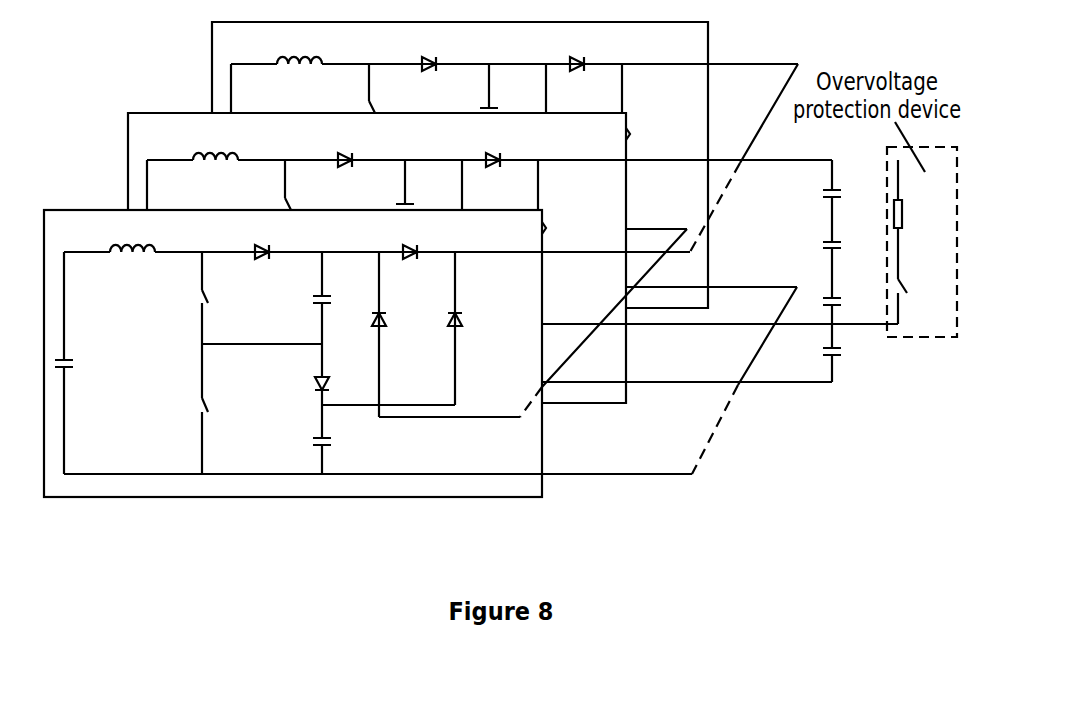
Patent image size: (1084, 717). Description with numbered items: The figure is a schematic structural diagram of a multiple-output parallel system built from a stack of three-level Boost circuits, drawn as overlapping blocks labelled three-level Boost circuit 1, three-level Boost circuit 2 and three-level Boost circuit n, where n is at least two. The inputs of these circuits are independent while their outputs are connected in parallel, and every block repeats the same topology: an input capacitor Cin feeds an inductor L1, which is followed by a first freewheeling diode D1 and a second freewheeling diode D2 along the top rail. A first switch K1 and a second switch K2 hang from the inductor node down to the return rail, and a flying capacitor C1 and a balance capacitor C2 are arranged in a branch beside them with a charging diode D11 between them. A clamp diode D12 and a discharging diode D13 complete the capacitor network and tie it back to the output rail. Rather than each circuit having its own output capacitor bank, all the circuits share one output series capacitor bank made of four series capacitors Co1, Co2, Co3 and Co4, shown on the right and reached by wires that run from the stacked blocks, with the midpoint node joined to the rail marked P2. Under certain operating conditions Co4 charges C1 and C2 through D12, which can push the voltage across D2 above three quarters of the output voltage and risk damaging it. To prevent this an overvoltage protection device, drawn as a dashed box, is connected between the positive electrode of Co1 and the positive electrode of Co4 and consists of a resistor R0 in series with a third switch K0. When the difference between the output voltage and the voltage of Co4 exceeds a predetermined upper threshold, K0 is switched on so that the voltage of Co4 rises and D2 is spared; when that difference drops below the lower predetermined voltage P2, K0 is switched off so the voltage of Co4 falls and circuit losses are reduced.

The three-level Boost circuit 1 is at (460, 165).
The three-level Boost circuit 2 is at (377, 258).
The three-level Boost circuit n is at (293, 353).
The inductor L1 is at (216, 142).
The first freewheeling diode D1 is at (346, 145).
The second freewheeling diode D2 is at (494, 145).
The first switch K1 is at (270, 204).
The second switch K2 is at (187, 409).
The input capacitor Cin is at (85, 363).
The flying capacitor C1 is at (350, 204).
The balance capacitor C2 is at (307, 454).
The charging diode D11 is at (298, 391).
The clamp diode D12 is at (356, 326).
The discharging diode D13 is at (516, 234).
The output series capacitor Co1 is at (852, 201).
The output series capacitor Co2 is at (852, 267).
The output series capacitor Co3 is at (852, 321).
The output series capacitor Co4 is at (852, 363).
The predetermined voltage P2 is at (720, 314).
The resistor R0 is at (915, 219).
The third switch K0 is at (916, 301).